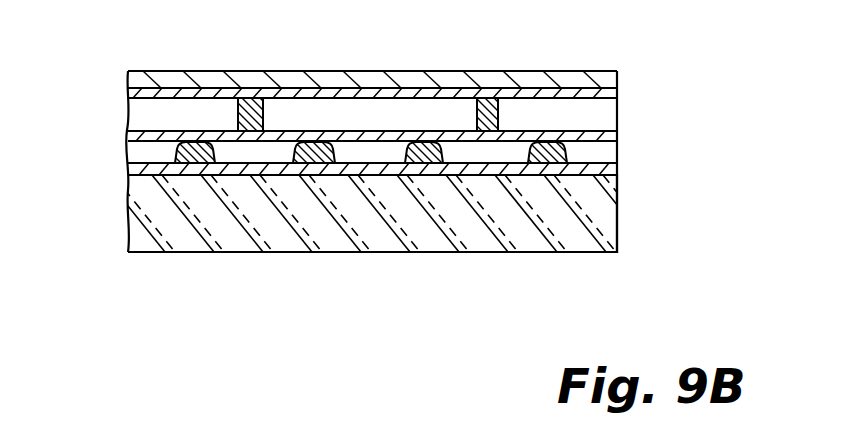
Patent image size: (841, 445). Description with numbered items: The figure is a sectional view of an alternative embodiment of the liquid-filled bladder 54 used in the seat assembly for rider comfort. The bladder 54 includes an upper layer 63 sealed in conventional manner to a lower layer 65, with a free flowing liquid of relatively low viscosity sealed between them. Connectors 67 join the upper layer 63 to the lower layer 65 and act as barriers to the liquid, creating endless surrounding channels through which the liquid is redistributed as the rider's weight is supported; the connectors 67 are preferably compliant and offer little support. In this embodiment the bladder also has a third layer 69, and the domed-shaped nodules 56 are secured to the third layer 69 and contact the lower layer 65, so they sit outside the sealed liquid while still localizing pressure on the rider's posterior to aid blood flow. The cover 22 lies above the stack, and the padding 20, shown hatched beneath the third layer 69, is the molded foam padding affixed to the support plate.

The padding 20 is at (593, 218).
The cover 22 is at (203, 78).
The liquid-filled bladder 54 is at (108, 127).
The domed-shaped nodules 56 is at (176, 148).
The upper layer 63 is at (617, 93).
The lower layer 65 is at (617, 134).
The connectors 67 is at (263, 112).
The third layer 69 is at (612, 164).